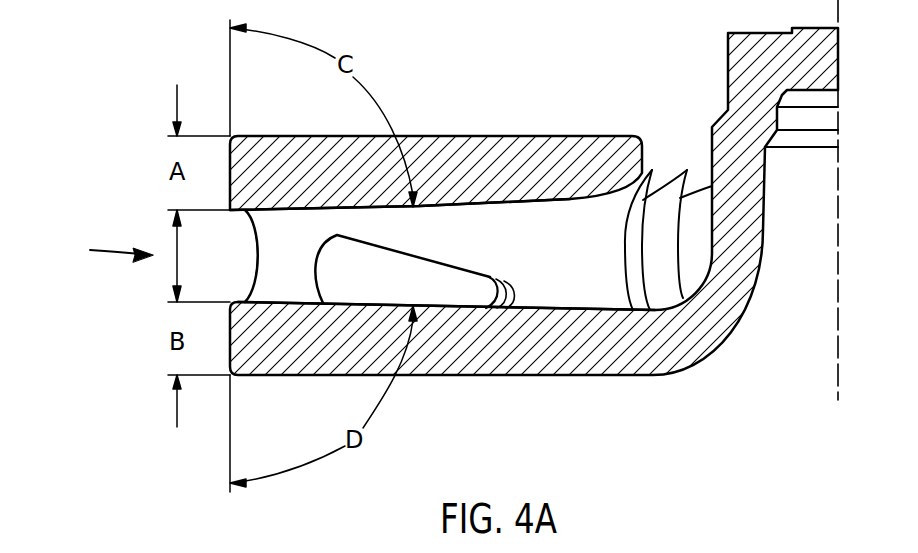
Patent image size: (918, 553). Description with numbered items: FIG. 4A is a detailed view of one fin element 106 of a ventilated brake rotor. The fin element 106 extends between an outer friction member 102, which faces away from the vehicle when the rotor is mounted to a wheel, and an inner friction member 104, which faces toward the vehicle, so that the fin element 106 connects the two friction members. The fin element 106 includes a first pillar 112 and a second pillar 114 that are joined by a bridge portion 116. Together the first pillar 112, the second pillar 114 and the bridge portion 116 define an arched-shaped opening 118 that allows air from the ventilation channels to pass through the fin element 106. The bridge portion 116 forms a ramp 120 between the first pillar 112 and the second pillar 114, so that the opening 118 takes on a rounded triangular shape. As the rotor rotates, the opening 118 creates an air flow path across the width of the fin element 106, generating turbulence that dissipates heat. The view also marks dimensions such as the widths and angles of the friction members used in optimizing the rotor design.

The outer friction member 102 is at (602, 372).
The inner friction member 104 is at (533, 137).
The fin element 106 is at (102, 252).
The first pillar 112 is at (578, 270).
The second pillar 114 is at (273, 242).
The bridge portion 116 is at (457, 225).
The arched-shaped opening 118 is at (356, 283).
The ramp 120 is at (447, 268).